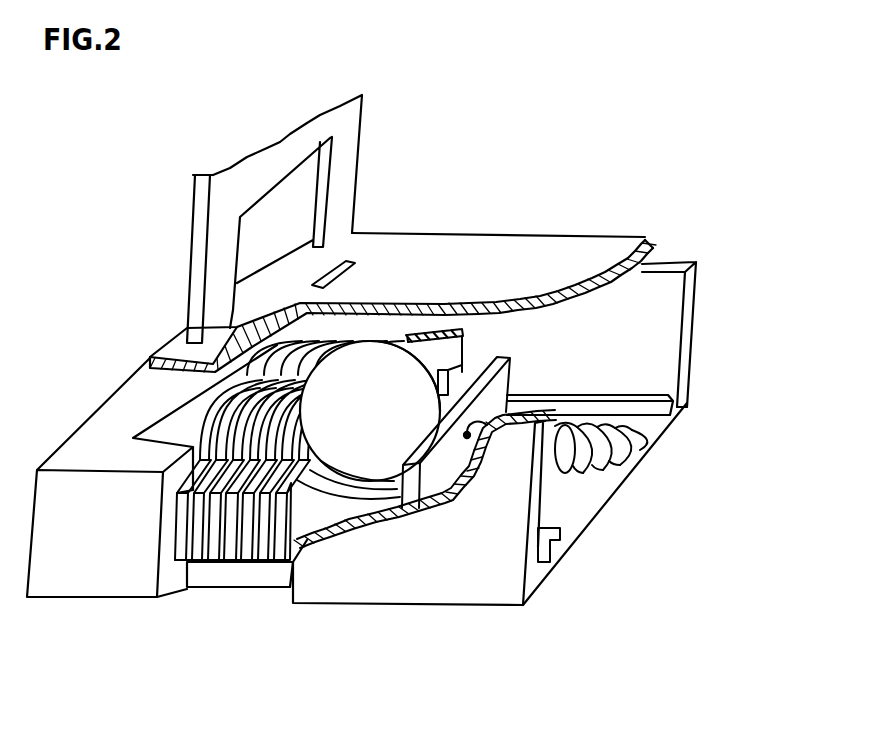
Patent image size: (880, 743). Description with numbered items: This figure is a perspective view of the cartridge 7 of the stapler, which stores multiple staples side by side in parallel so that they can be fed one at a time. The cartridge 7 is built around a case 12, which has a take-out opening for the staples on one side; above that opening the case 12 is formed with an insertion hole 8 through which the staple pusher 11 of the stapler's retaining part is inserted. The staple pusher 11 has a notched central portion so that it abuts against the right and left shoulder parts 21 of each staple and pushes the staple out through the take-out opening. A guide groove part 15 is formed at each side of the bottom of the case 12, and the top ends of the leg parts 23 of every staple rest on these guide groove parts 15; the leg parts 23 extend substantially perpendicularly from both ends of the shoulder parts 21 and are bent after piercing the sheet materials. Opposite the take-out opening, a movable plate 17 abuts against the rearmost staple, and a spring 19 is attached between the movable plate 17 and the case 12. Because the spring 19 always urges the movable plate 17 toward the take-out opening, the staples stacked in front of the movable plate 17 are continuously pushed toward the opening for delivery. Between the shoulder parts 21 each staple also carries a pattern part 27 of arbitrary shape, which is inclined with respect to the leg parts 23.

The cartridge 7 is at (483, 250).
The insertion hole 8 is at (350, 263).
The staple pusher 11 is at (212, 238).
The case 12 is at (600, 245).
The guide groove part 15 is at (693, 402).
The movable plate 17 is at (443, 462).
The spring 19 is at (603, 467).
The shoulder parts 21 is at (458, 347).
The leg parts 23 is at (283, 556).
The pattern part 27 is at (378, 455).